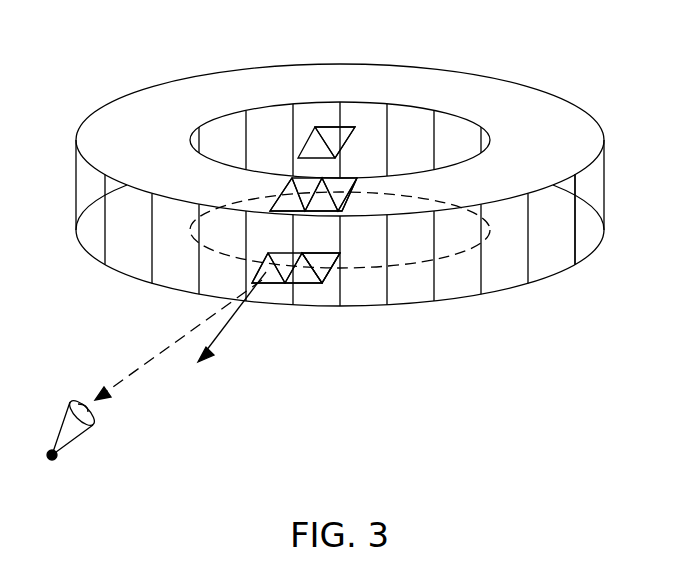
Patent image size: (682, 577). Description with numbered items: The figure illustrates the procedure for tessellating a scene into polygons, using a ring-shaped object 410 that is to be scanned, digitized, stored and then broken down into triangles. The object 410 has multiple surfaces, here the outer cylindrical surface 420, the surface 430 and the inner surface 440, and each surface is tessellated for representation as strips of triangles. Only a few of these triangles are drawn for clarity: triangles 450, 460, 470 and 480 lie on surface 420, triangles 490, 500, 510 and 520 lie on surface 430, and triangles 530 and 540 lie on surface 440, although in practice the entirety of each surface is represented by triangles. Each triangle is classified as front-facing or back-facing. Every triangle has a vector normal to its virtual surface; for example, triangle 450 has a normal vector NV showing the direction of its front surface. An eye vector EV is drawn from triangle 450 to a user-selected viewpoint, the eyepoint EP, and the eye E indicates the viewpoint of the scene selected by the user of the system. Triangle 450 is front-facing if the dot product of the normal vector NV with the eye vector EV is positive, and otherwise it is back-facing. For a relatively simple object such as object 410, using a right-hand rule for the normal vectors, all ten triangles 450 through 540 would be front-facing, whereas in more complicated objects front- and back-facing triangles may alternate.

The object 410 is at (494, 70).
The surface 420 is at (170, 268).
The surface 430 is at (577, 122).
The surface 440 is at (415, 122).
The triangle 450 is at (272, 268).
The triangle 460 is at (281, 268).
The triangle 470 is at (300, 268).
The triangle 480 is at (326, 258).
The triangle 490 is at (290, 182).
The triangle 500 is at (300, 185).
The triangle 510 is at (336, 180).
The triangle 520 is at (325, 183).
The triangle 530 is at (312, 148).
The triangle 540 is at (340, 135).
The normal vector NV is at (224, 335).
The eye vector EV is at (132, 373).
The eye E is at (70, 402).
The eyepoint EP is at (52, 455).